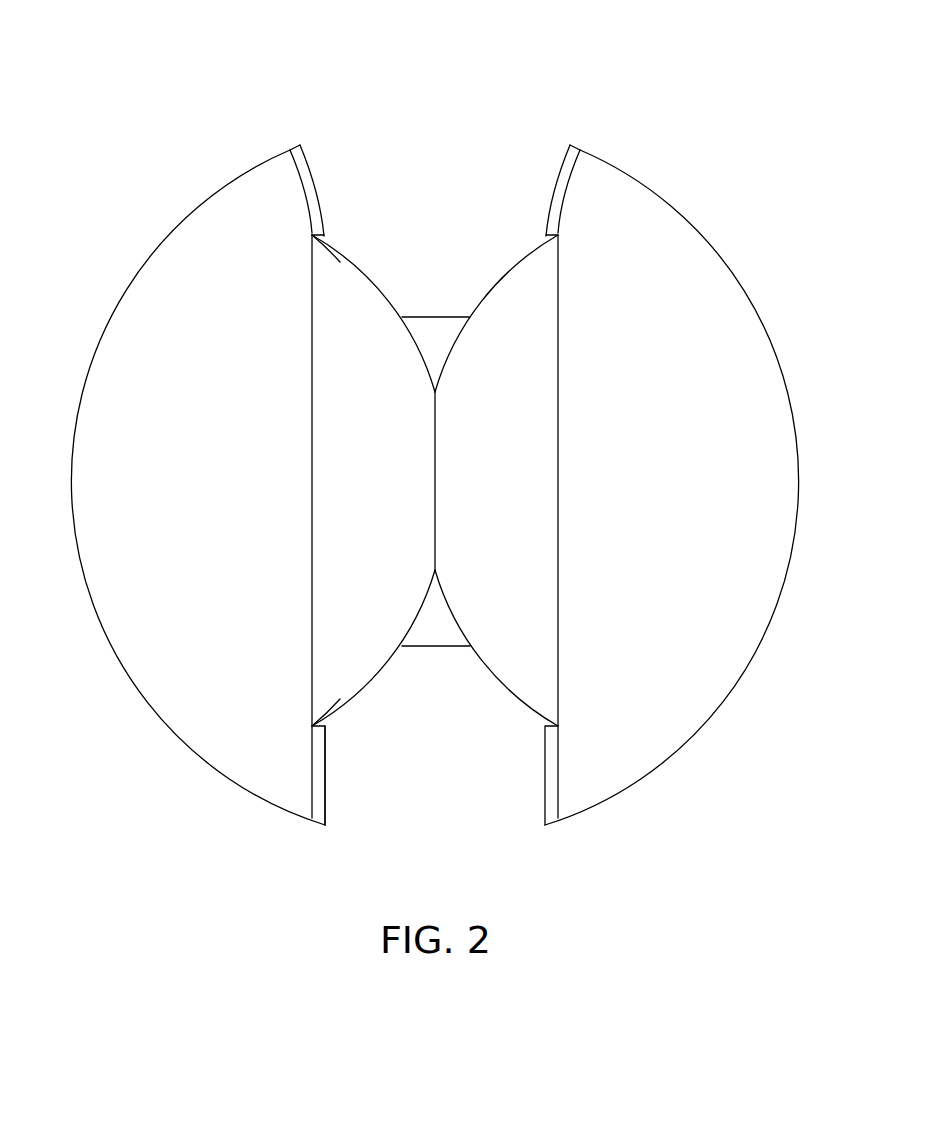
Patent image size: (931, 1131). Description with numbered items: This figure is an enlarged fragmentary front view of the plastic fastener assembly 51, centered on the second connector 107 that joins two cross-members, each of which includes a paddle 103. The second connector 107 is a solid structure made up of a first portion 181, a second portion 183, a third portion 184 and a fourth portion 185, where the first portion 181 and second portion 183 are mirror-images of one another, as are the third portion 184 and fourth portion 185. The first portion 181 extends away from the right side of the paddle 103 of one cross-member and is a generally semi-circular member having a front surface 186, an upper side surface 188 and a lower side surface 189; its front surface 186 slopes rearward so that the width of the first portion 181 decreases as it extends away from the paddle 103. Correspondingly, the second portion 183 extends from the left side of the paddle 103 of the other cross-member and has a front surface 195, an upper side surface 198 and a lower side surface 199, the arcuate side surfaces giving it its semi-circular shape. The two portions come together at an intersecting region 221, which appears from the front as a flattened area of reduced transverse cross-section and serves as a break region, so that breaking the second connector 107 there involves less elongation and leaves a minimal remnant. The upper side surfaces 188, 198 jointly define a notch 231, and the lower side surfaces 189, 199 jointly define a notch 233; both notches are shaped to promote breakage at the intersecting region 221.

The magnetic closure assembly 51 is at (408, 100).
The paddle 103 is at (155, 263).
The second connector 107 is at (425, 743).
The first portion 181 is at (335, 233).
The second portion 183 is at (517, 232).
The third portion 184 is at (410, 330).
The fourth portion 185 is at (410, 628).
The front surface 186 is at (318, 430).
The upper side surface 188 is at (350, 258).
The lower side surface 189 is at (350, 703).
The front surface 195 is at (548, 425).
The upper side surface 198 is at (520, 258).
The lower side surface 199 is at (520, 703).
The intersecting region 221 is at (438, 485).
The notch 231 is at (442, 335).
The notch 233 is at (433, 623).